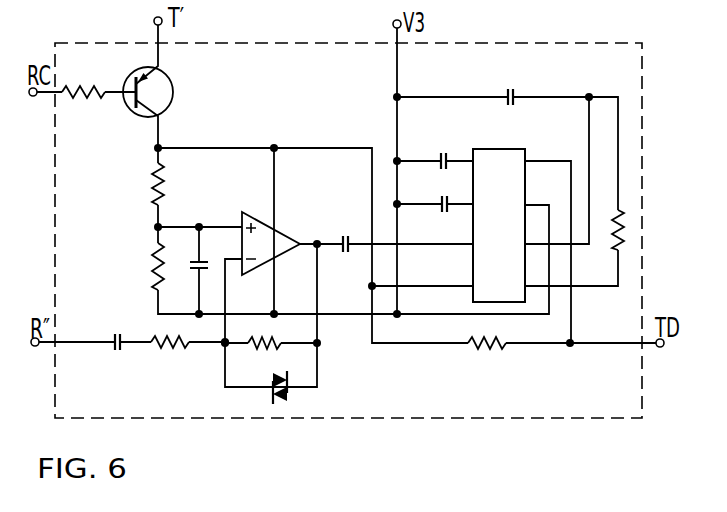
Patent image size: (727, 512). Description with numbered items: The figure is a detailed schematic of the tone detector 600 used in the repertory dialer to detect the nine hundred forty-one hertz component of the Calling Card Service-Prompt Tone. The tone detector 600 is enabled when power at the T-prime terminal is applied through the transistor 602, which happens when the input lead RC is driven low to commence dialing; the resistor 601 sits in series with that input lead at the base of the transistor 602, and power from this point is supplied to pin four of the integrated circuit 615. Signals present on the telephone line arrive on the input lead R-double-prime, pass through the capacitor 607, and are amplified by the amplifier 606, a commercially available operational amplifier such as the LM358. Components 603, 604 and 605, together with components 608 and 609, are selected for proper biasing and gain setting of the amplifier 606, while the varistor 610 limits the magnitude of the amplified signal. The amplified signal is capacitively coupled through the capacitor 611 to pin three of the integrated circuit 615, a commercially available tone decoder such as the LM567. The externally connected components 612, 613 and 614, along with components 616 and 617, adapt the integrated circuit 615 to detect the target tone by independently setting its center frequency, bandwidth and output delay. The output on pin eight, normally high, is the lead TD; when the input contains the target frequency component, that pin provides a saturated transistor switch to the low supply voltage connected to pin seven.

The tone detector 600 is at (500, 43).
The resistor 601 is at (68, 94).
The transistor 602 is at (173, 84).
The biasing component 603 is at (150, 177).
The biasing component 604 is at (150, 258).
The biasing component 605 is at (197, 271).
The amplifier 606 is at (248, 210).
The capacitor 607 is at (114, 332).
The gain setting component 608 is at (172, 341).
The gain setting component 609 is at (276, 344).
The varistor 610 is at (289, 396).
The capacitor 611 is at (344, 235).
The externally connected component 612 is at (441, 197).
The externally connected component 613 is at (440, 155).
The externally connected component 614 is at (512, 91).
The integrated circuit 615 is at (506, 149).
The externally connected component 616 is at (612, 239).
The externally connected component 617 is at (485, 345).